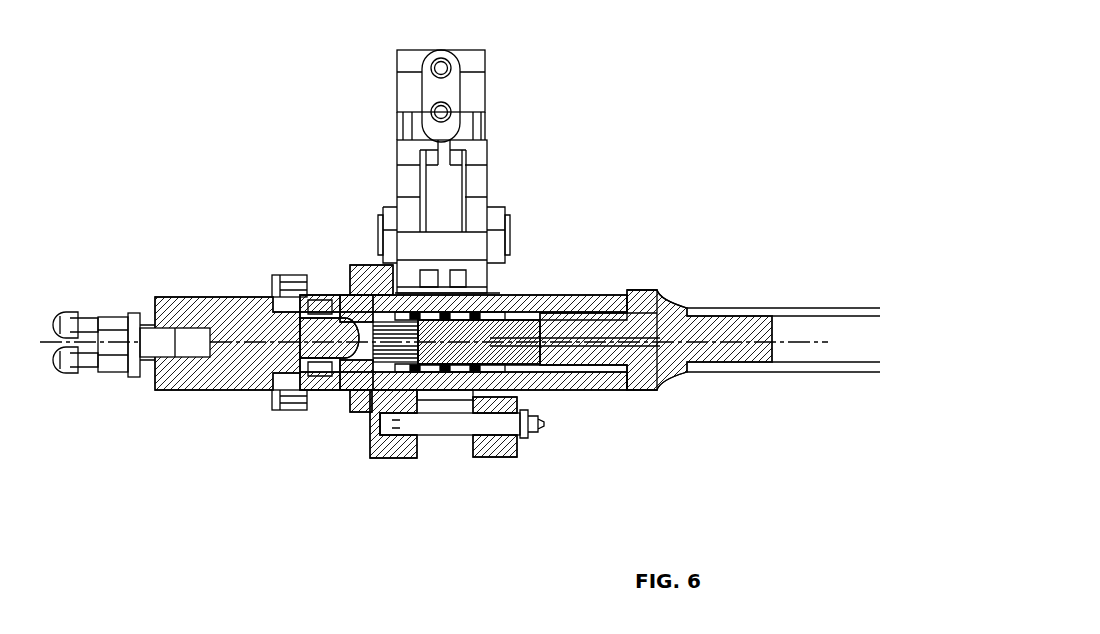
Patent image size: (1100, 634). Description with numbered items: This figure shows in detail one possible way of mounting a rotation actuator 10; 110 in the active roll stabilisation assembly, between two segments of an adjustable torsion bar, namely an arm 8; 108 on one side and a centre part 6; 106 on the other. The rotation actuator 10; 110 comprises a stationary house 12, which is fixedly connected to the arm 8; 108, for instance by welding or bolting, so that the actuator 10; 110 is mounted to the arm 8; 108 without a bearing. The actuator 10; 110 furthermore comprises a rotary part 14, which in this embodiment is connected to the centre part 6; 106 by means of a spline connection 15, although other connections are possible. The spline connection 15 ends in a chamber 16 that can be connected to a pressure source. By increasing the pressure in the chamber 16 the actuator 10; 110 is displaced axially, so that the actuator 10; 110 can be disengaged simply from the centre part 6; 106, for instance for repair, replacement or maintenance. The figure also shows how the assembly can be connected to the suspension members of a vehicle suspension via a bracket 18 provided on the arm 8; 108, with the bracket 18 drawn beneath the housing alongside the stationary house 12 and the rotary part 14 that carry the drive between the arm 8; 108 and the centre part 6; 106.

The centre part 6 is at (783, 302).
The centre part 106 is at (830, 308).
The arm 8 is at (411, 447).
The arm 108 is at (370, 413).
The rotation actuator 10 is at (176, 309).
The rotation actuator 110 is at (187, 297).
The stationary house 12 is at (295, 273).
The rotary part 14 is at (295, 405).
The spline connection 15 is at (340, 397).
The chamber 16 is at (530, 388).
The bracket 18 is at (447, 420).